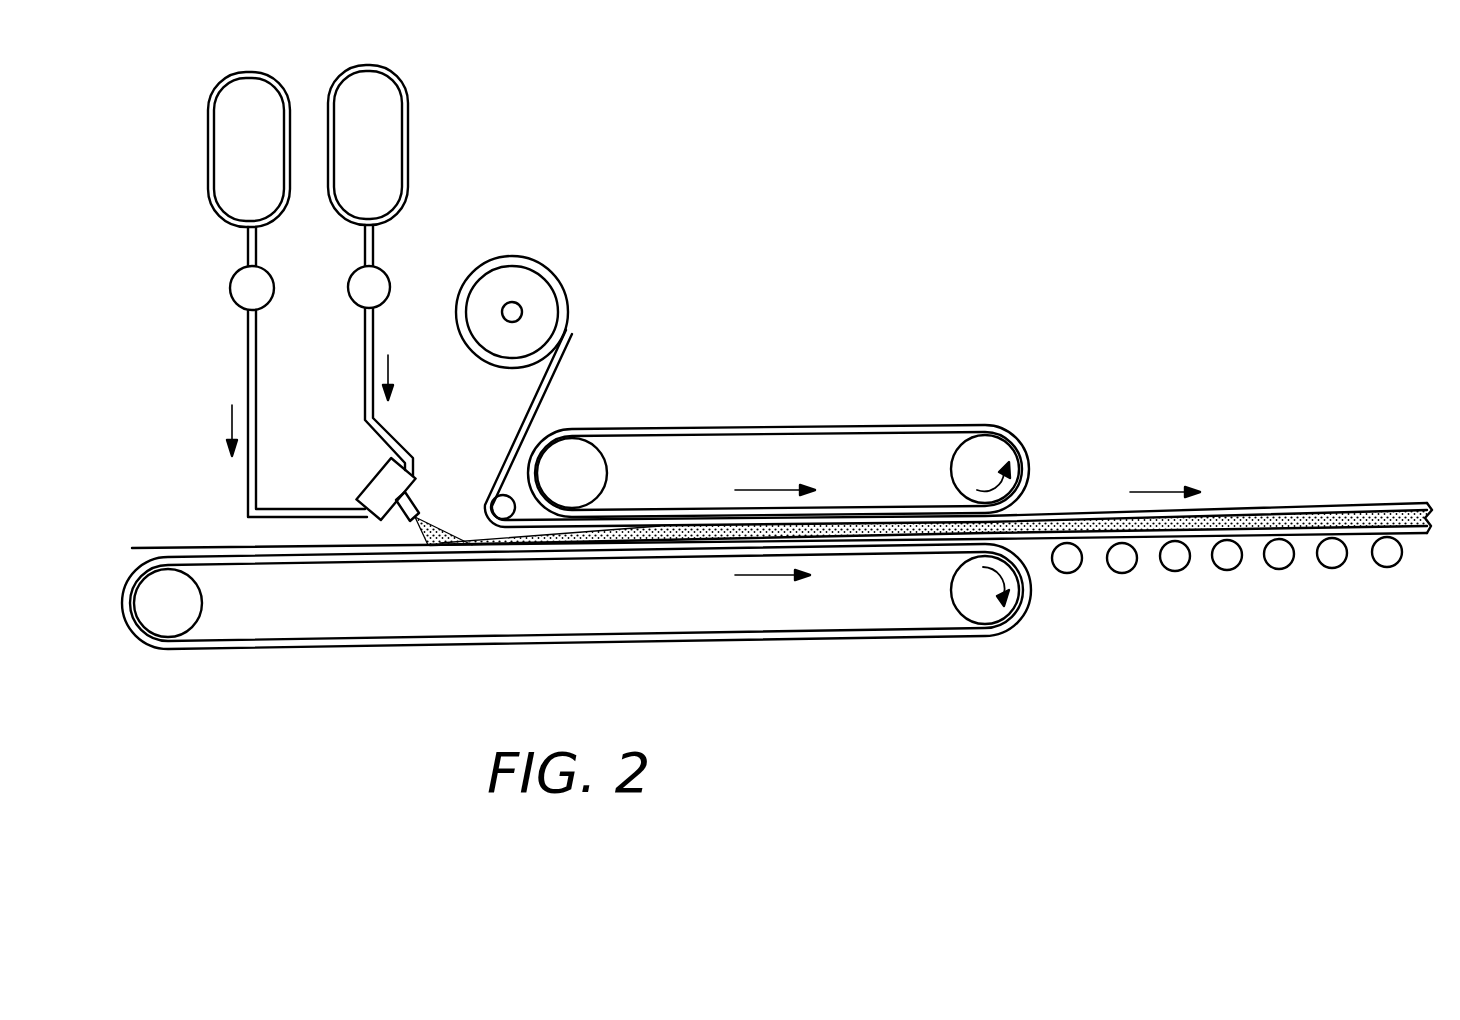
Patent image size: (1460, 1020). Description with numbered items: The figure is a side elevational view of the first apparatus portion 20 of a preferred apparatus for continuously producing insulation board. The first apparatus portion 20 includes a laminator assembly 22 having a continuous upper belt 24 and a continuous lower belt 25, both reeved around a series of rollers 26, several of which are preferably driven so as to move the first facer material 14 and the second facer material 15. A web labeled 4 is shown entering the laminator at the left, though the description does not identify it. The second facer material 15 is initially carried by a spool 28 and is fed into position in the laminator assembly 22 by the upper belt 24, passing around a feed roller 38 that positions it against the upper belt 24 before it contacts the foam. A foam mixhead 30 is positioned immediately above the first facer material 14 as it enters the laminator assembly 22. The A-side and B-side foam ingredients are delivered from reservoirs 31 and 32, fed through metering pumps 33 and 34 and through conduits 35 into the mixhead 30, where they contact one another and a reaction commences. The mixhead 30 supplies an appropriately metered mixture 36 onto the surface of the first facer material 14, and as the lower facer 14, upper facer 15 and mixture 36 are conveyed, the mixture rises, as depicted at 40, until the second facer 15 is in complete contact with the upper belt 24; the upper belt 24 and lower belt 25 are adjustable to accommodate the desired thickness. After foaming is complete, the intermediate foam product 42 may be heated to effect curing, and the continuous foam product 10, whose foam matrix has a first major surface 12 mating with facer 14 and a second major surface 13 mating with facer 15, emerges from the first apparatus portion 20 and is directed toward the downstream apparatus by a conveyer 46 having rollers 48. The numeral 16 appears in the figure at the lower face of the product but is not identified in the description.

The lower facing web 4 is at (133, 547).
The foam product 10 is at (1392, 485).
The first major surface 12 is at (1258, 530).
The second major surface 13 is at (1285, 508).
The first facer material 14 is at (556, 546).
The second facer material 15 is at (512, 396).
The lower surface of board 16 is at (1360, 520).
The first apparatus portion 20 is at (752, 345).
The laminator assembly 22 is at (372, 665).
The continuous upper belt 24 is at (830, 428).
The continuous lower belt 25 is at (462, 641).
The rollers 26 is at (175, 622).
The spool 28 is at (518, 276).
The foam mixhead 30 is at (376, 490).
The reservoir 31 is at (222, 150).
The reservoir 32 is at (388, 146).
The metering pump 33 is at (240, 292).
The metering pump 34 is at (374, 289).
The conduits 35 is at (248, 358).
The mixture 36 is at (438, 530).
The feed roller 38 is at (500, 500).
The rising mixture 40 is at (606, 536).
The intermediate foam product 42 is at (898, 530).
The conveyer 46 is at (1196, 588).
The rollers 48 is at (1122, 572).